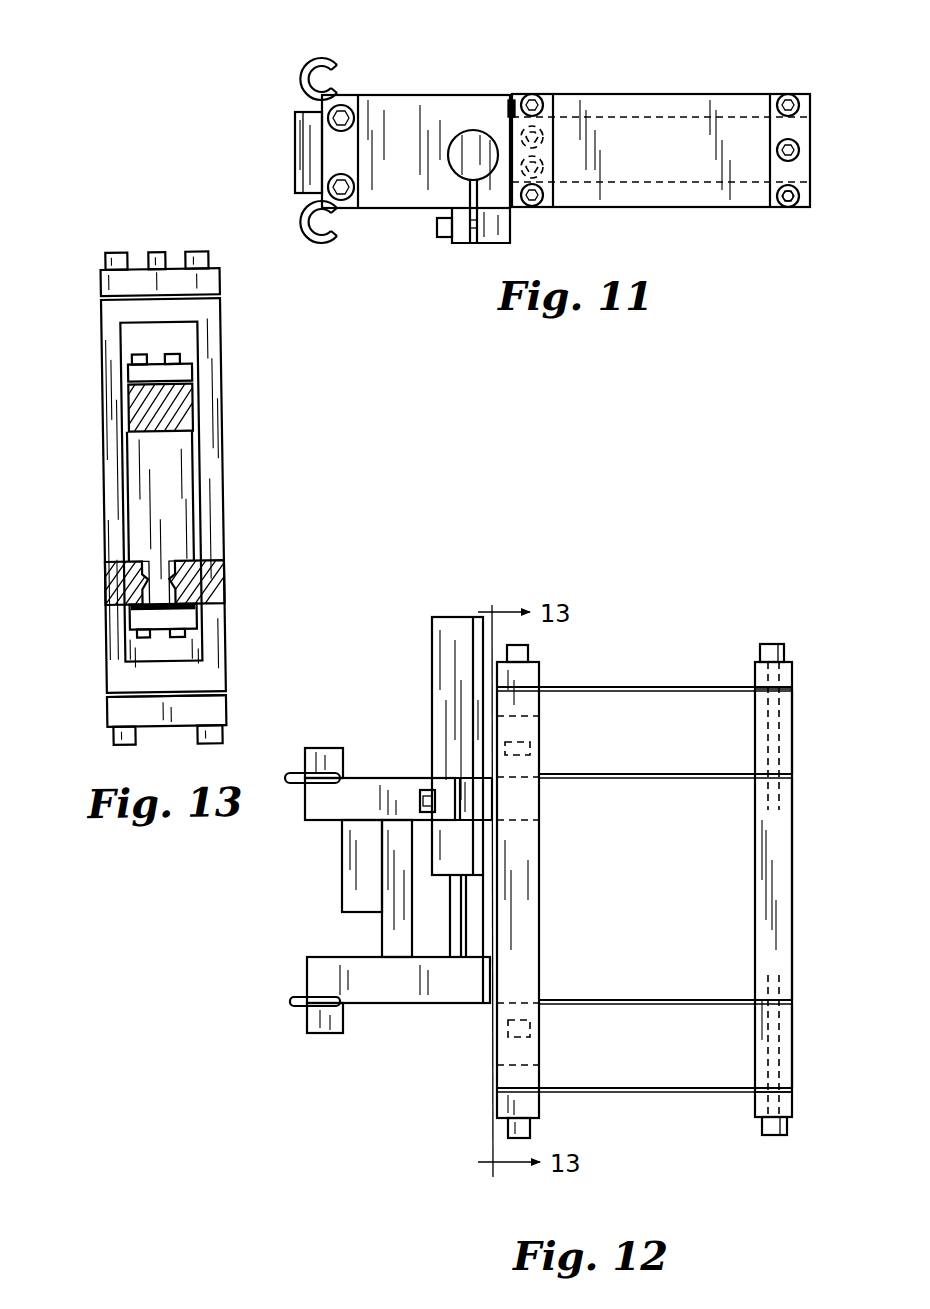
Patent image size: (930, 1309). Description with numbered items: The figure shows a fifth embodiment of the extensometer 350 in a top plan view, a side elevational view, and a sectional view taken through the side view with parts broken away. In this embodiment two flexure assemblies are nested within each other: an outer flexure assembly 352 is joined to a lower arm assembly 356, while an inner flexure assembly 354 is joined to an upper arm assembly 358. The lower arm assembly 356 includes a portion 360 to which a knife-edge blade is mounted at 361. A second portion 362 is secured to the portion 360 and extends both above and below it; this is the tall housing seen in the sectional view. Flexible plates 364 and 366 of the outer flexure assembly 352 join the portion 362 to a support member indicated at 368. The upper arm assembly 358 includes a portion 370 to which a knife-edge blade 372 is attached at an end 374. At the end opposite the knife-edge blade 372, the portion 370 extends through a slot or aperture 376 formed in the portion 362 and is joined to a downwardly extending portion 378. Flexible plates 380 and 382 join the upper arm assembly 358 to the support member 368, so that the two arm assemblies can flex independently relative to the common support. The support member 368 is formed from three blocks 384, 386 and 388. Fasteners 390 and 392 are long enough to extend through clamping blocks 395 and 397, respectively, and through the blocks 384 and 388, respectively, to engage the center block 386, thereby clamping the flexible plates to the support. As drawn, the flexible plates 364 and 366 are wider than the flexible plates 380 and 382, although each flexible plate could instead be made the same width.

In FIG. 11, the extensometer 350 is at (454, 76).
In FIG. 12, the extensometer 350 is at (403, 733).
In FIG. 12, the outer flexure assembly 352 is at (675, 668).
In FIG. 12, the inner flexure assembly 354 is at (680, 1015).
In FIG. 12, the lower arm assembly 356 is at (462, 1008).
In FIG. 12, the upper arm assembly 358 is at (405, 772).
In FIG. 13, the portion 360 is at (213, 607).
In FIG. 12, the portion 360 is at (378, 1005).
In FIG. 12, the knife-edge blade mount 361 is at (293, 990).
In FIG. 13, the second portion 362 is at (225, 519).
In FIG. 13, the flexible plate 364 is at (103, 288).
In FIG. 12, the flexible plate 364 is at (606, 688).
In FIG. 13, the flexible plate 366 is at (103, 700).
In FIG. 12, the flexible plate 366 is at (603, 1088).
In FIG. 12, the support member 368 is at (812, 638).
In FIG. 11, the portion 370 is at (384, 96).
In FIG. 13, the portion 370 is at (170, 432).
In FIG. 12, the portion 370 is at (327, 822).
In FIG. 11, the knife-edge blade 372 is at (298, 112).
In FIG. 12, the end 374 is at (302, 765).
In FIG. 11, the slot or aperture 376 is at (512, 95).
In FIG. 13, the slot or aperture 376 is at (187, 347).
In FIG. 13, the downwardly extending portion 378 is at (193, 483).
In FIG. 13, the flexible plate 380 is at (197, 381).
In FIG. 12, the flexible plate 380 is at (632, 774).
In FIG. 13, the flexible plate 382 is at (198, 613).
In FIG. 12, the flexible plate 382 is at (632, 1000).
In FIG. 12, the block 384 is at (792, 740).
In FIG. 12, the center block 386 is at (793, 885).
In FIG. 12, the block 388 is at (795, 1045).
In FIG. 11, the fastener 390 is at (800, 107).
In FIG. 12, the fastener 390 is at (770, 644).
In FIG. 12, the fastener 392 is at (782, 1135).
In FIG. 11, the clamping block 395 is at (790, 207).
In FIG. 12, the clamping block 395 is at (792, 672).
In FIG. 12, the clamping block 397 is at (795, 1100).